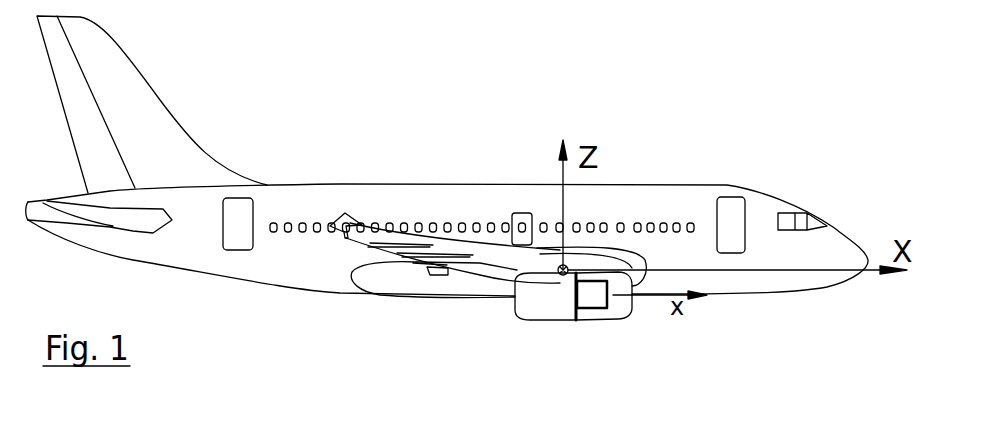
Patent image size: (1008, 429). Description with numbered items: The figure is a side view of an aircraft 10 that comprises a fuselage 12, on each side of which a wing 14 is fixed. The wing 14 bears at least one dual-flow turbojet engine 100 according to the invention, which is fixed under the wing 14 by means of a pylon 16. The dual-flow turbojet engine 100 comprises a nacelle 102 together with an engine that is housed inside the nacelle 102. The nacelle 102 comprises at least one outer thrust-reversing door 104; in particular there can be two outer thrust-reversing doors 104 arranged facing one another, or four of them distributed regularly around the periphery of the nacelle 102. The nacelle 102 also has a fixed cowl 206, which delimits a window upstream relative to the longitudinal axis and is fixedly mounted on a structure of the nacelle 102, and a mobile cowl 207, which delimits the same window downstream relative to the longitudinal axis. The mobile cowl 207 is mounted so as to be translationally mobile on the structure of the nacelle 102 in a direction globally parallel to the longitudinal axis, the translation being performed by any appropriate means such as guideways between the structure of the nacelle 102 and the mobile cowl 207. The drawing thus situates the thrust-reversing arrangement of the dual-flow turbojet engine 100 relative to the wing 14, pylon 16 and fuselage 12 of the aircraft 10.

The aircraft 10 is at (762, 95).
The fuselage 12 is at (755, 208).
The wing 14 is at (443, 242).
The pylon 16 is at (533, 272).
The dual-flow turbojet engine 100 is at (490, 342).
The nacelle 102 is at (553, 310).
The outer thrust-reversing door 104 is at (595, 297).
The fixed cowl 206 is at (623, 307).
The mobile cowl 207 is at (527, 302).